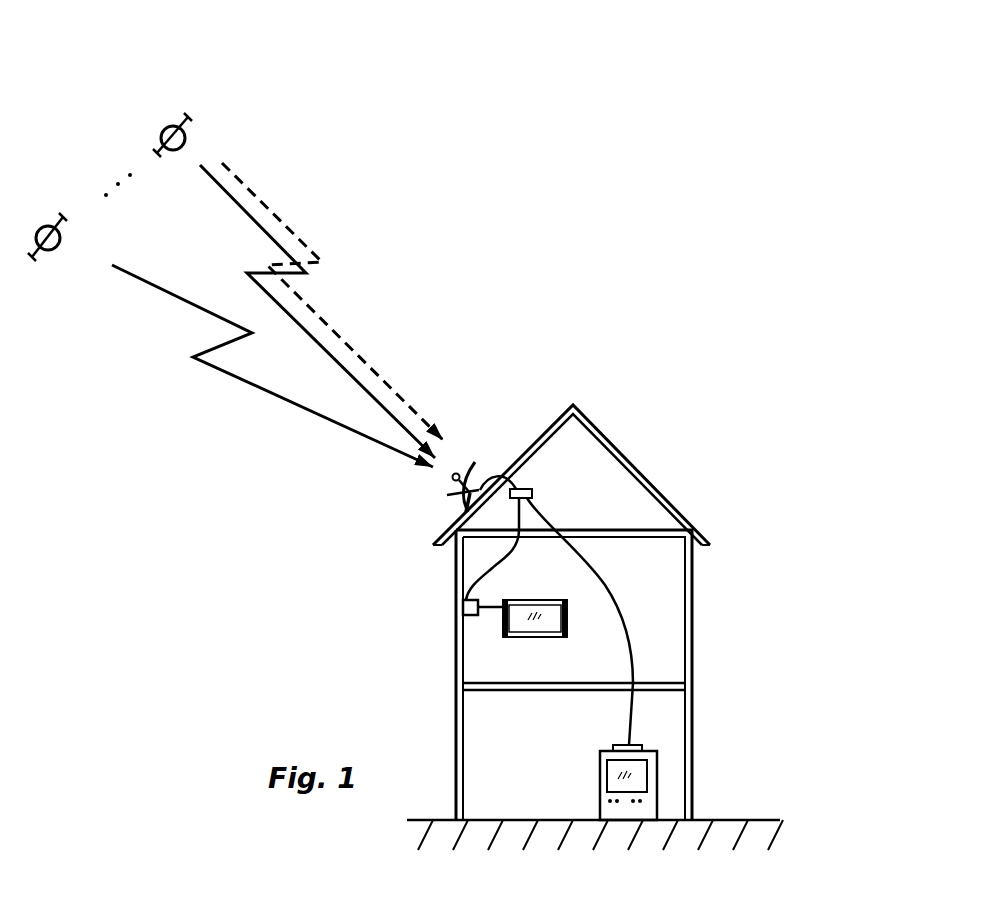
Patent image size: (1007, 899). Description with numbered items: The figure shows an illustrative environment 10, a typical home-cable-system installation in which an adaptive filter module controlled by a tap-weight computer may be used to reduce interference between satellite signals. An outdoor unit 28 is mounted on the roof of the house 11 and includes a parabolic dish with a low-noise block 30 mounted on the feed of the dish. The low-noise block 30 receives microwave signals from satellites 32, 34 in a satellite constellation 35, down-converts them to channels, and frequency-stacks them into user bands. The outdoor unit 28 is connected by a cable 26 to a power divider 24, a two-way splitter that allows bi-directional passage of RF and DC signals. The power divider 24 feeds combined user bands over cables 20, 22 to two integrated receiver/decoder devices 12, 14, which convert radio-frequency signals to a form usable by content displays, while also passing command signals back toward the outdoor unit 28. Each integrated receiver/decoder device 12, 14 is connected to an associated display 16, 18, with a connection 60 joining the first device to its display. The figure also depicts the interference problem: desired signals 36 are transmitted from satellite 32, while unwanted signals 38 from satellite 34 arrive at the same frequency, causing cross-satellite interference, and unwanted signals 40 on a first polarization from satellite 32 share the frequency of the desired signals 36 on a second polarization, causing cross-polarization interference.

The environment 10 is at (730, 461).
The house 11 is at (689, 517).
The integrated receiver/decoder device 12 is at (479, 601).
The integrated receiver/decoder device 14 is at (619, 744).
The display device 16 is at (552, 600).
The second display device 18 is at (600, 791).
The cable 20 is at (513, 565).
The cable 22 is at (626, 600).
The power divider 24 is at (534, 494).
The cable 26 is at (518, 480).
The outdoor unit 28 is at (444, 506).
The low-noise block 30 is at (470, 476).
The satellite 32 is at (188, 148).
The satellite 34 is at (62, 245).
The satellite constellation 35 is at (165, 74).
The desired signals 36 is at (234, 221).
The unwanted signals 38 is at (249, 397).
The unwanted signals 40 is at (301, 216).
The connection between receiver and display 60 is at (498, 612).